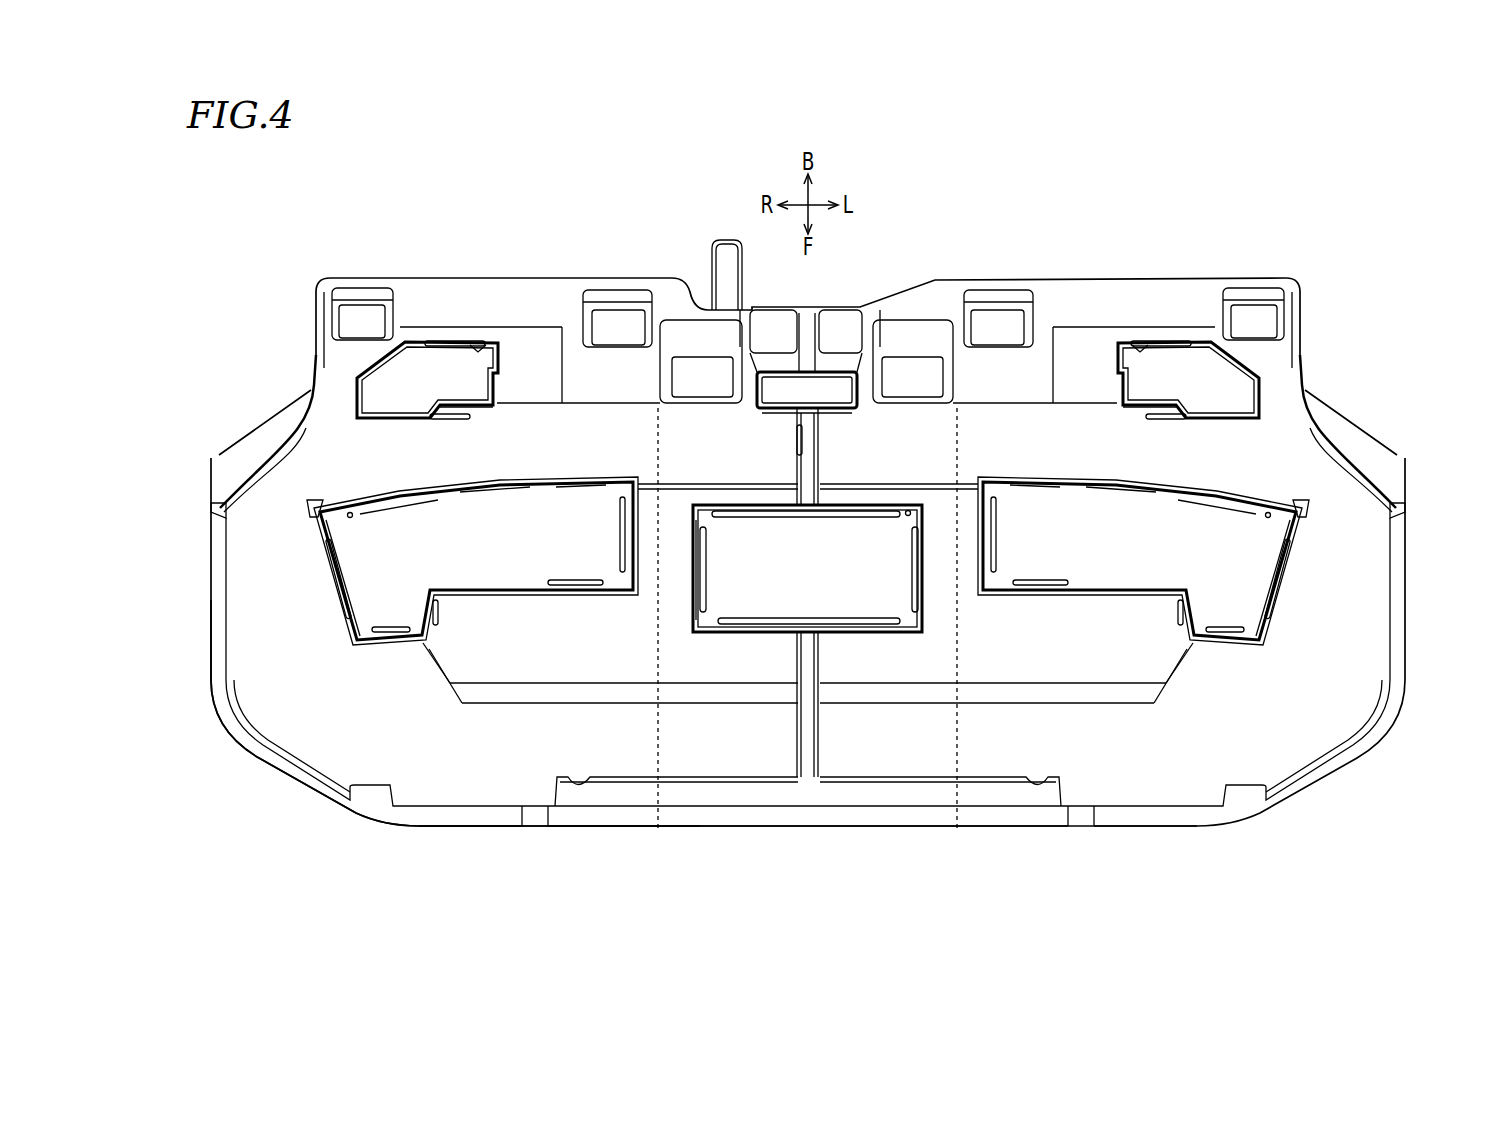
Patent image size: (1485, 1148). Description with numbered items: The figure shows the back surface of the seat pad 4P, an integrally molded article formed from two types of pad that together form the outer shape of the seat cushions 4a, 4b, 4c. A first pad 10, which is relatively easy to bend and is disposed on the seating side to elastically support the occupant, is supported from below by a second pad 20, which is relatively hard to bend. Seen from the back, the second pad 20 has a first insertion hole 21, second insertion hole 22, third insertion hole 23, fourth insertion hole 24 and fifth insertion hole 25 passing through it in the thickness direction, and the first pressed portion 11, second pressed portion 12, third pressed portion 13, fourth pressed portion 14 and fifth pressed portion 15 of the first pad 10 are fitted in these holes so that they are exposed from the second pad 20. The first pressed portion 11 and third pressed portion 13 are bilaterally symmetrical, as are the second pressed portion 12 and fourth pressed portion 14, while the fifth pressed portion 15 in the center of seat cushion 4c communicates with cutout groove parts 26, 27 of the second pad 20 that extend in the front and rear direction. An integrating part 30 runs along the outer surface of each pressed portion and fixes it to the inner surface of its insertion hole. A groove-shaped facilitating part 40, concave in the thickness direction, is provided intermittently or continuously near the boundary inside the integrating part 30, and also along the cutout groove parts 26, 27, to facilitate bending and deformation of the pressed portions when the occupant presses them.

The seat pad 4P is at (1189, 240).
The first pad 10 is at (808, 493).
The first pressed portion 11 is at (450, 554).
The second pressed portion 12 is at (401, 385).
The third pressed portion 13 is at (1086, 554).
The fourth pressed portion 14 is at (1142, 385).
The fifth pressed portion 15 is at (770, 580).
The second pad 20 is at (318, 714).
The first insertion hole 21 is at (342, 618).
The second insertion hole 22 is at (454, 410).
The third insertion hole 23 is at (1272, 618).
The fourth insertion hole 24 is at (1160, 410).
The fifth insertion hole 25 is at (694, 618).
The cutout groove part 26 is at (822, 665).
The cutout groove part 27 is at (822, 465).
The integrating part 30 is at (478, 345).
The facilitating part 40 is at (428, 342).
The seat cushion 4a is at (457, 822).
The seat cushion 4b is at (1158, 822).
The seat cushion 4c is at (806, 822).